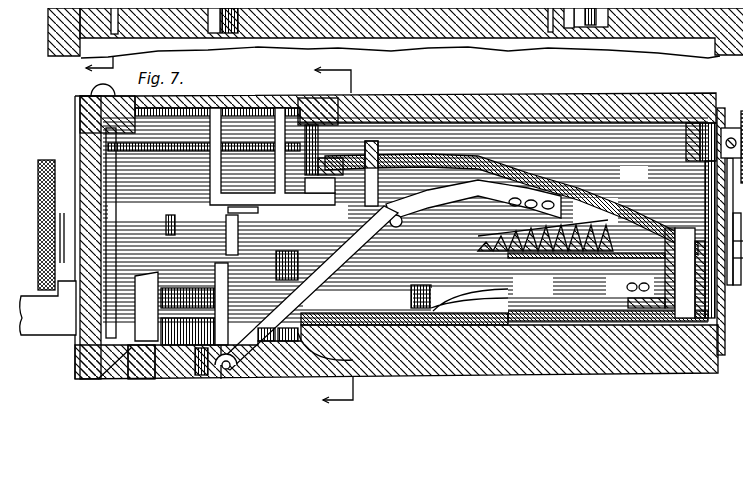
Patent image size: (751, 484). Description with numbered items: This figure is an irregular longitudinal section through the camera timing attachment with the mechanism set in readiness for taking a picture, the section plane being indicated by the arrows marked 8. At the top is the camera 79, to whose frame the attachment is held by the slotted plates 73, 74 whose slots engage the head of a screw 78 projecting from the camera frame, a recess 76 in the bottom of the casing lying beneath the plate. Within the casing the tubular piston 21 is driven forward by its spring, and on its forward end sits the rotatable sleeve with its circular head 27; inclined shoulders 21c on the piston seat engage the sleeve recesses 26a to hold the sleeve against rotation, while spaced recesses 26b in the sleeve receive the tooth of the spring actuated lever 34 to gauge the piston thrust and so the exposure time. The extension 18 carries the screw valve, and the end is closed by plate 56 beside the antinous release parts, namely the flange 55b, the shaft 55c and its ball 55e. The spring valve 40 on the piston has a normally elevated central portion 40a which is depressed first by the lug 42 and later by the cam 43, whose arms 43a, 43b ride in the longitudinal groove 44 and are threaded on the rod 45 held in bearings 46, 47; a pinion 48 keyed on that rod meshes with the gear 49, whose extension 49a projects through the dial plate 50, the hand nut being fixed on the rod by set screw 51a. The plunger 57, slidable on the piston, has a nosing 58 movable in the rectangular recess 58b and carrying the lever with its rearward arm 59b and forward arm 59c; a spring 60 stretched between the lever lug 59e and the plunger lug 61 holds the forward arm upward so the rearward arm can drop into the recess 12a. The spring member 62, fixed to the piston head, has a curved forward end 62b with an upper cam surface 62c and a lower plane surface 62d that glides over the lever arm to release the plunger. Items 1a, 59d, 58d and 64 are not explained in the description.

The slotted plate 73 is at (240, 25).
The camera 79 is at (53, 22).
The slotted plate 74 is at (543, 2).
The recess 76 is at (557, 2).
The screw 78 is at (594, 18).
The extension 18 is at (111, 67).
The rod 45 is at (432, 140).
The longitudinal groove 44 is at (166, 96).
The spring actuated lever 34 is at (72, 143).
The plate 56 is at (82, 88).
The cam arm 43a is at (205, 102).
The cam arm 43b is at (264, 92).
The bearing 46 is at (305, 133).
The guide band 1a is at (511, 204).
The lug 42 is at (366, 150).
The cam 43 is at (263, 193).
The inclined shoulders 21c is at (235, 203).
The recesses 26b is at (112, 228).
The sleeve recesses 26a is at (218, 212).
The plunger 57 is at (288, 252).
The central portion of spring valve 40a is at (473, 200).
The spring valve 40 is at (452, 211).
The rearward lever arm 59b is at (308, 288).
The forward lever arm 59c is at (248, 299).
The lever block 59d is at (264, 304).
The tubular piston 21 is at (560, 204).
The spring member 62 is at (583, 286).
The forward end of spring member 62b is at (450, 322).
The cam surface 62c is at (415, 322).
The plane surface 62d is at (447, 394).
The gear 49 is at (702, 303).
The bearing 47 is at (672, 114).
The pinion 48 is at (712, 105).
The gear extension 49a is at (713, 248).
The dial plate 50 is at (738, 104).
The set screw 51a is at (723, 130).
The member 64 is at (750, 378).
The recess 12a is at (373, 370).
The plate 58d is at (404, 356).
The nosing 58 is at (295, 370).
The rectangular recess 58b is at (275, 370).
The section line 8 is at (343, 232).
The spring 60 is at (123, 367).
The lug 61 is at (85, 370).
The lever lug 59e is at (200, 263).
The ball 55e is at (220, 363).
The shaft 55c is at (70, 356).
The flange 55b is at (67, 321).
The circular head 27 is at (32, 186).